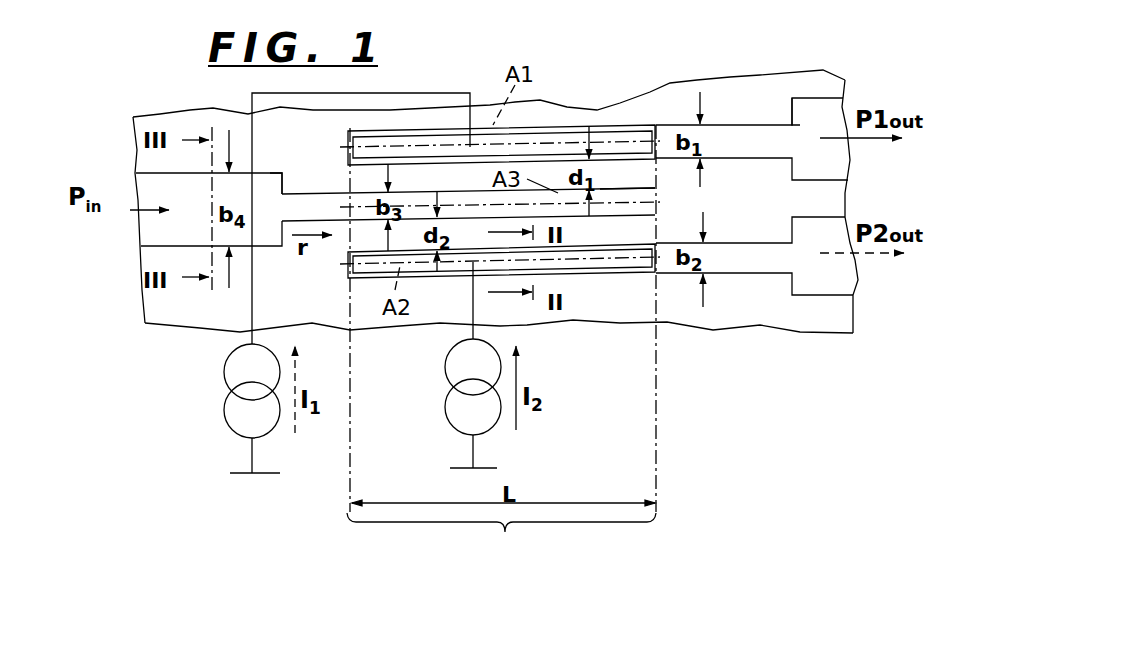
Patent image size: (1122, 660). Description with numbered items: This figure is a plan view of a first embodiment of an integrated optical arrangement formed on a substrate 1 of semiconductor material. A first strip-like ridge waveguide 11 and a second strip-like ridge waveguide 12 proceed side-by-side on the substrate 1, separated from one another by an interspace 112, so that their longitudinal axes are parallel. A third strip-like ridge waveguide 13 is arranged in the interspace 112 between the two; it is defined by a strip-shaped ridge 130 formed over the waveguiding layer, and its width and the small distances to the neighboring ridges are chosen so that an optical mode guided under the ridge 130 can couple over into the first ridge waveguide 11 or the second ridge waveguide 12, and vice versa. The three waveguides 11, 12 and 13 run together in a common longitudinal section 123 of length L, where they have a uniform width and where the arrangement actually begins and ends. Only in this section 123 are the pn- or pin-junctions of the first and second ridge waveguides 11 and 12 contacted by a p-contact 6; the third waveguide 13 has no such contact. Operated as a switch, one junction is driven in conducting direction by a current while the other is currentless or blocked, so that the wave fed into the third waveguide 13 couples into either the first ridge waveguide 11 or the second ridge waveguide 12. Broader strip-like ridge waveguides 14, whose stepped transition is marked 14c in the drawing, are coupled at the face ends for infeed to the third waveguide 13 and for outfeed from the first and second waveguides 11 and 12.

The substrate 1 is at (773, 334).
The p-contact 6 is at (612, 138).
The first strip-like ridge waveguide 11 is at (573, 124).
The second strip-like ridge waveguide 12 is at (607, 279).
The third strip-like ridge waveguide 13 is at (488, 189).
The strip-like ridge waveguide 14 is at (268, 250).
The stepped corner portion 14c is at (270, 172).
The interspace 112 is at (630, 187).
The common longitudinal section 123 is at (501, 349).
The strip-shaped ridge 130 is at (412, 192).